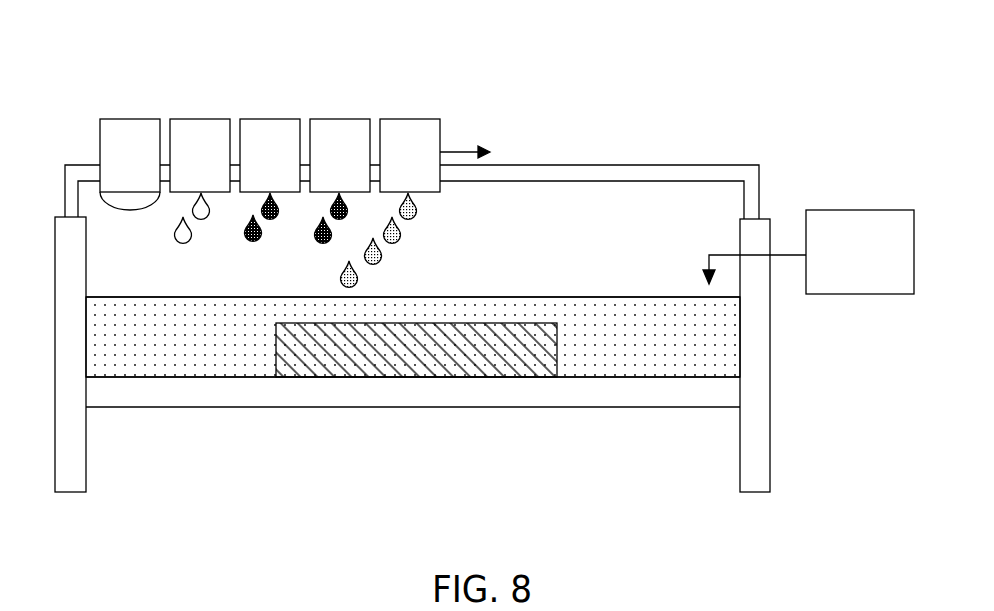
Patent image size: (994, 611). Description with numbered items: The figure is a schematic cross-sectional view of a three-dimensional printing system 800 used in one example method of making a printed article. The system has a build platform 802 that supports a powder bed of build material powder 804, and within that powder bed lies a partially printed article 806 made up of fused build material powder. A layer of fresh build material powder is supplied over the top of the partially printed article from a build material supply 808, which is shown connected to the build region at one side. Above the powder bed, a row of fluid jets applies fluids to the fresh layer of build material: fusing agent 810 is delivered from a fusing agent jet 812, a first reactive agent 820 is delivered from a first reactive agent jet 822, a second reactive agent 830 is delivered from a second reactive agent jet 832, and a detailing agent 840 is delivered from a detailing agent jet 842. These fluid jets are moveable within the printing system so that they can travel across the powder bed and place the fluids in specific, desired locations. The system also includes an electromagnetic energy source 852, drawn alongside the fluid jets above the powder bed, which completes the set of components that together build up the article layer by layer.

The 3D printing system 800 is at (147, 55).
The build platform 802 is at (578, 388).
The build material powder 804 is at (258, 363).
The partially printed article 806 is at (340, 380).
The build material supply 808 is at (882, 264).
The fusing agent 810 is at (400, 237).
The fusing agent jet 812 is at (430, 166).
The first reactive agent 820 is at (315, 236).
The first reactive agent jet 822 is at (360, 166).
The second reactive agent 830 is at (246, 236).
The second reactive agent jet 832 is at (290, 166).
The detailing agent 840 is at (181, 236).
The detailing agent jet 842 is at (220, 166).
The electromagnetic energy source 852 is at (150, 166).